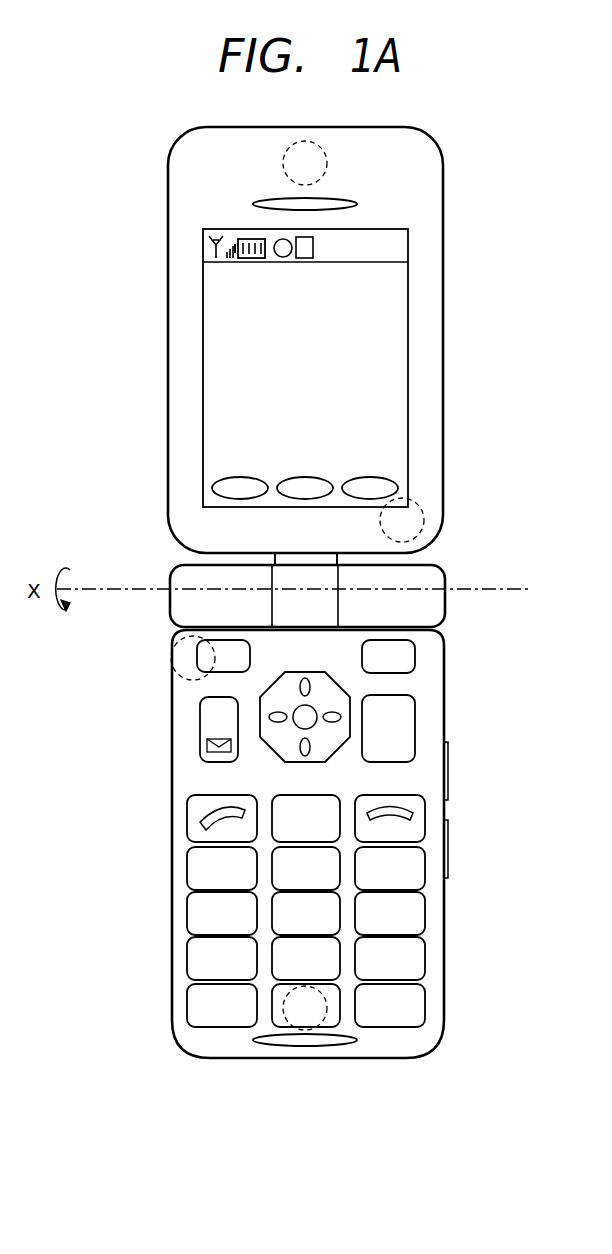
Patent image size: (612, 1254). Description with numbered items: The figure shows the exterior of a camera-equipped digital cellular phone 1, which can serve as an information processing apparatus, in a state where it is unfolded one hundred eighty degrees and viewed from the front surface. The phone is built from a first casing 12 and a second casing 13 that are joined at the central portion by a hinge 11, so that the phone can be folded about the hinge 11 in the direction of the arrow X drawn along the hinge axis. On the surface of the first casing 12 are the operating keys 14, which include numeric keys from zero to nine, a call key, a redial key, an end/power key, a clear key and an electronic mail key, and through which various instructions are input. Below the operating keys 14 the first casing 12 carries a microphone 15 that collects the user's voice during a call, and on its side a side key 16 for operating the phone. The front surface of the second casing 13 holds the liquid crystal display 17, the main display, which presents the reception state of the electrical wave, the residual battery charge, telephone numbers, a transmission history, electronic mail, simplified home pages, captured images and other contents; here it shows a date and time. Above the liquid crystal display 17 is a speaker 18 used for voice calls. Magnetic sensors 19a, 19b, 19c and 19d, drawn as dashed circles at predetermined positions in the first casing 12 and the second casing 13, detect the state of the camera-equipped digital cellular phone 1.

The camera-equipped digital cellular phone 1 is at (452, 890).
The hinge 11 is at (436, 568).
The first casing 12 is at (444, 708).
The second casing 13 is at (428, 370).
The operating keys 14 is at (152, 657).
The microphone 15 is at (357, 1038).
The side key 16 is at (448, 770).
The liquid crystal display 17 is at (400, 285).
The speaker 18 is at (357, 204).
The magnetic sensor 19a is at (327, 162).
The magnetic sensor 19b is at (327, 1000).
The magnetic sensor 19c is at (424, 516).
The magnetic sensor 19d is at (172, 646).